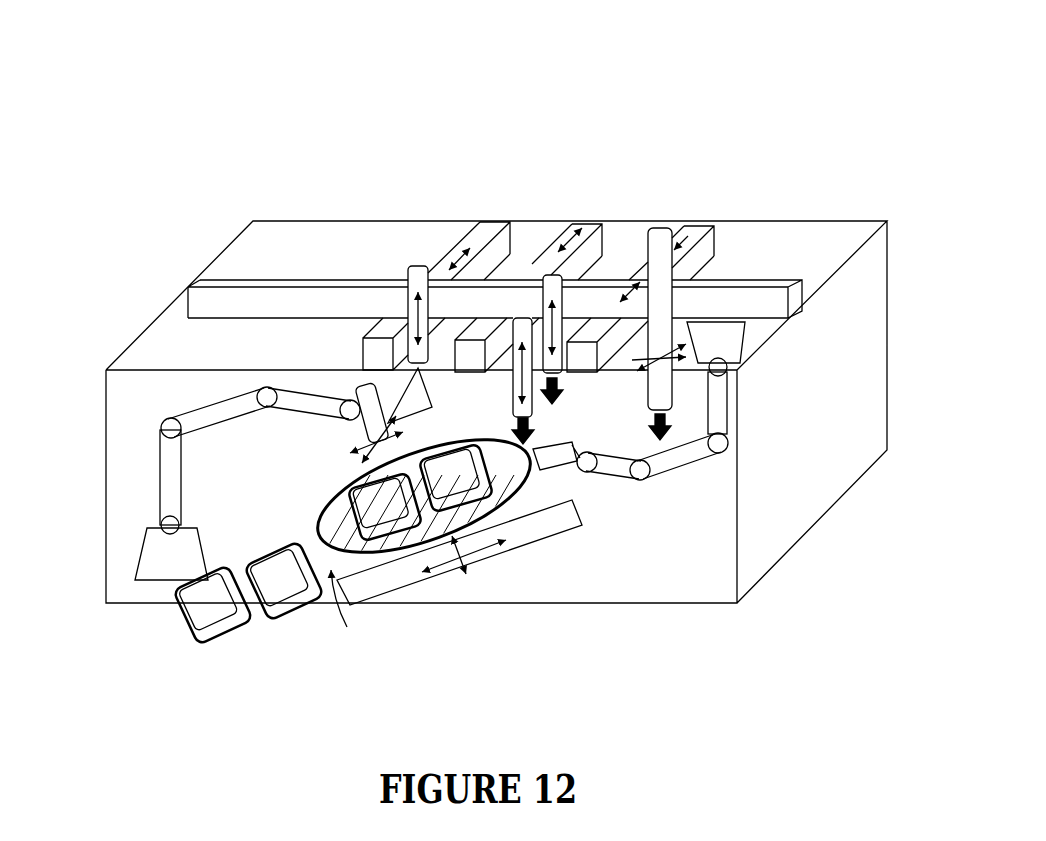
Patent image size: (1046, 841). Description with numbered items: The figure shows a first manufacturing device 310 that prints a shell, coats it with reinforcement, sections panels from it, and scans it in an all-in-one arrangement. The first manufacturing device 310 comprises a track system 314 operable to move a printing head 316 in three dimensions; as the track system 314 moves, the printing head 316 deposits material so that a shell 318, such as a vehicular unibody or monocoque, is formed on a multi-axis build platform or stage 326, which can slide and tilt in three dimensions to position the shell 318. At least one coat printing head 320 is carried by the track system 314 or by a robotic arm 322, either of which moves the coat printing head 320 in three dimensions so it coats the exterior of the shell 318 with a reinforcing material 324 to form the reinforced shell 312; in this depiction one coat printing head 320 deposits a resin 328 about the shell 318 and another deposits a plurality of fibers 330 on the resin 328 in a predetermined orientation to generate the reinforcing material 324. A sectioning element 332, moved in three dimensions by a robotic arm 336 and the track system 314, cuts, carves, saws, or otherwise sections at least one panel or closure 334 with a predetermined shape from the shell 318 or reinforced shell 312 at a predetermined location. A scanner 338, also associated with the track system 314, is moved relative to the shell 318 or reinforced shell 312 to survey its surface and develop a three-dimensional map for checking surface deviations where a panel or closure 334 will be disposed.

The first manufacturing device 310 is at (707, 98).
The reinforced shell 312 is at (518, 498).
The track system 314 is at (363, 258).
The printing head 316 is at (697, 275).
The shell 318 is at (353, 611).
The coat printing head 320 is at (560, 278).
The robotic arm 322 is at (160, 470).
The reinforcing material 324 is at (352, 478).
The multi-axis build platform or stage 326 is at (497, 560).
The resin 328 is at (560, 380).
The plurality of fibers 330 is at (516, 432).
The sectioning element 332 is at (556, 470).
The panel or closure 334 is at (207, 648).
The robotic arm 336 is at (685, 462).
The scanner 338 is at (409, 266).